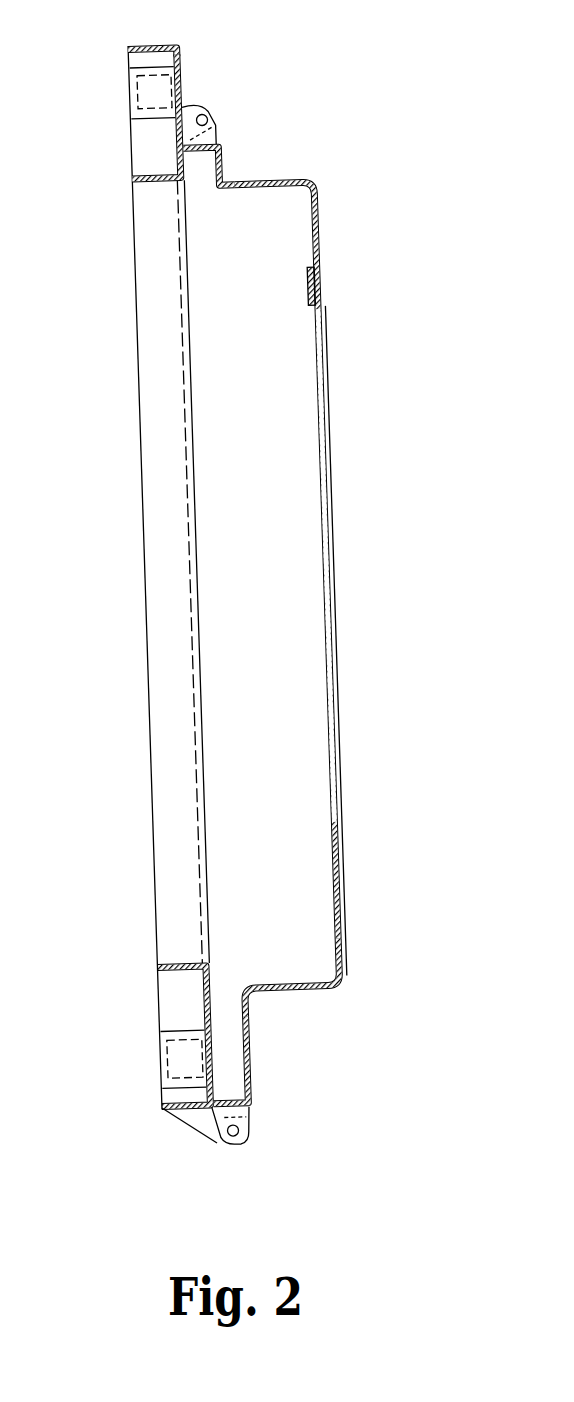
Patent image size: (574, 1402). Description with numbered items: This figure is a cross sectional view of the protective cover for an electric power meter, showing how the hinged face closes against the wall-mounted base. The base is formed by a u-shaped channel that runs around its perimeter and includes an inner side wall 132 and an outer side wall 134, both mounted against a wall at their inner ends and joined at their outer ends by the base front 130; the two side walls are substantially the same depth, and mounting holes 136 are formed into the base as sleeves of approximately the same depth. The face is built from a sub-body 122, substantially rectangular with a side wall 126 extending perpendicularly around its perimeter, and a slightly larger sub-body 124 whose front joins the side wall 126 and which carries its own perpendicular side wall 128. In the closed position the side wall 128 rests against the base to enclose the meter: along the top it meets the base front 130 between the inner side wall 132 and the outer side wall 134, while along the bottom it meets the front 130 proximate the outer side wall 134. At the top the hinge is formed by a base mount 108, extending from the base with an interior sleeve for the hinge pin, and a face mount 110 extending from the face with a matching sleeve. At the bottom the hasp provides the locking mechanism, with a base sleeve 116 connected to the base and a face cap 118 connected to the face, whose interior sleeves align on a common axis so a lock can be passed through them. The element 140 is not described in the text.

The base mount 108 is at (214, 127).
The face mount 110 is at (184, 106).
The base sleeve 116 is at (247, 1121).
The face cap 118 is at (203, 1117).
The sub-body 122 is at (322, 223).
The sub-body 124 is at (222, 160).
The side wall 126 is at (277, 990).
The side wall 128 is at (249, 1102).
The base front 130 is at (194, 551).
The inner side wall 132 is at (148, 180).
The outer side wall 134 is at (148, 46).
The mounting hole 136 is at (132, 98).
The rib on side wall 140 is at (323, 290).